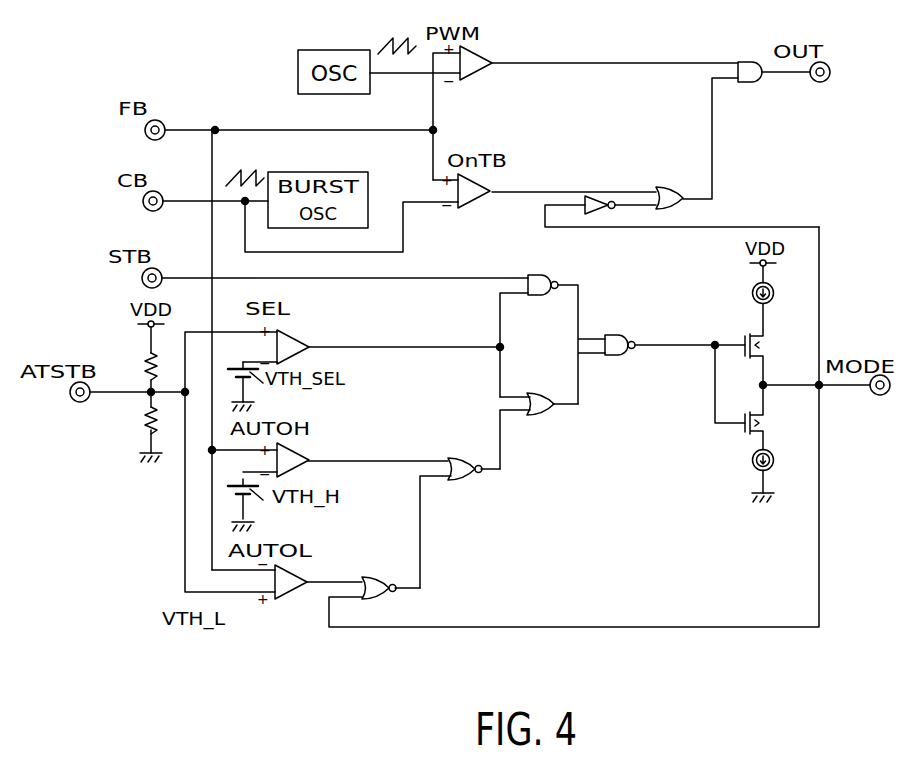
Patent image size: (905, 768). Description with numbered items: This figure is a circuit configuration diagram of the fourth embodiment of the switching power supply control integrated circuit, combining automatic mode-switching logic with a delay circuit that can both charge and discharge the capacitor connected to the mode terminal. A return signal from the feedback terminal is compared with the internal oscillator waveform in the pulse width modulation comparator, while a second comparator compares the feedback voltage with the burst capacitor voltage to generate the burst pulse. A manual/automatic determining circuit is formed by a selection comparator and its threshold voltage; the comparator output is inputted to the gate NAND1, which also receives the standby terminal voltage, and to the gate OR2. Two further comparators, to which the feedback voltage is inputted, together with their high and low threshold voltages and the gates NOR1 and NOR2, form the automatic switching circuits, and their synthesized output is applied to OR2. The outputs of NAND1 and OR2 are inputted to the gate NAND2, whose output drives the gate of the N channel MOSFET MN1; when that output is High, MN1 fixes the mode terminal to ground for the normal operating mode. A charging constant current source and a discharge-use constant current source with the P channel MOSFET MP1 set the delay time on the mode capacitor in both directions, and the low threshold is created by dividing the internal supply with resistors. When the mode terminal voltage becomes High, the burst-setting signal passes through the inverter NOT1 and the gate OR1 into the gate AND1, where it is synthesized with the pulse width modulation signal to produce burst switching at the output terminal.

The AND gate AND1 is at (746, 130).
The NOT gate NOT1 is at (682, 197).
The OR gate OR1 is at (667, 188).
The NAND gate NAND1 is at (552, 339).
The NAND gate NAND2 is at (663, 358).
The OR gate OR2 is at (539, 431).
The NOR gate NOR1 is at (460, 523).
The NOR gate NOR2 is at (382, 600).
The P channel MOSFET MP1 is at (777, 344).
The N channel MOSFET MN1 is at (777, 417).